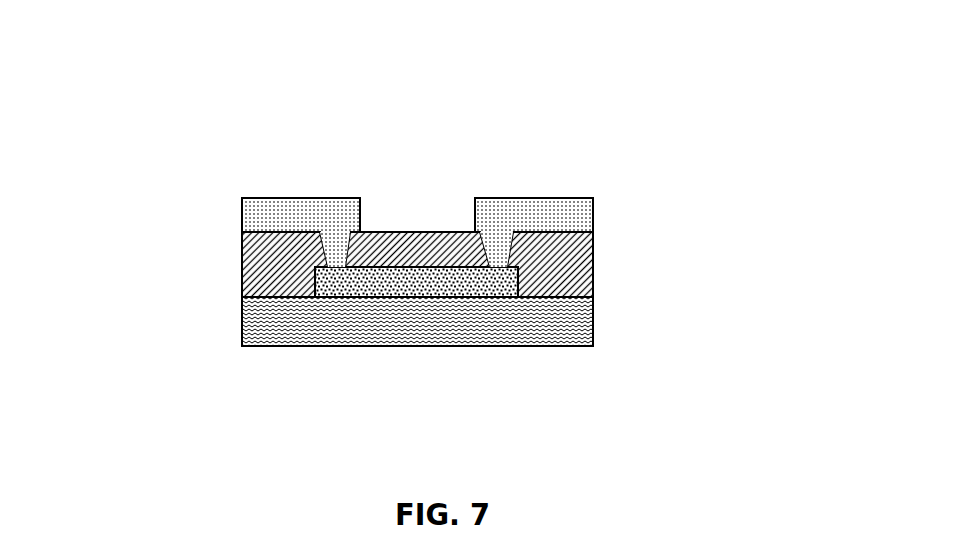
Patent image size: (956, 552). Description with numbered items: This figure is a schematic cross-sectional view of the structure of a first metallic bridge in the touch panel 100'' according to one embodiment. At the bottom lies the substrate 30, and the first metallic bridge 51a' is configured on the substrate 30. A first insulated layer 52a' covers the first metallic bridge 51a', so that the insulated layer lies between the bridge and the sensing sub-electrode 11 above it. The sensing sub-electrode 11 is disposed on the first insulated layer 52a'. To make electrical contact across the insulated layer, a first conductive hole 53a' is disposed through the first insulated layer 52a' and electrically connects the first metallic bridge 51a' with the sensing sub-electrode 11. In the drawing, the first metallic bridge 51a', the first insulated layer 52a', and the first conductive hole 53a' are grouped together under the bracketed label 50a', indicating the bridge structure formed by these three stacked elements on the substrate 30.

The touch panel 100'' is at (435, 227).
The sensing sub-electrode 11 is at (242, 212).
The substrate 30 is at (538, 346).
The redistribution layer 50a' is at (417, 152).
The first metallic bridge 51a' is at (285, 187).
The first insulated layer 52a' is at (412, 172).
The first conductive hole 53a' is at (499, 187).